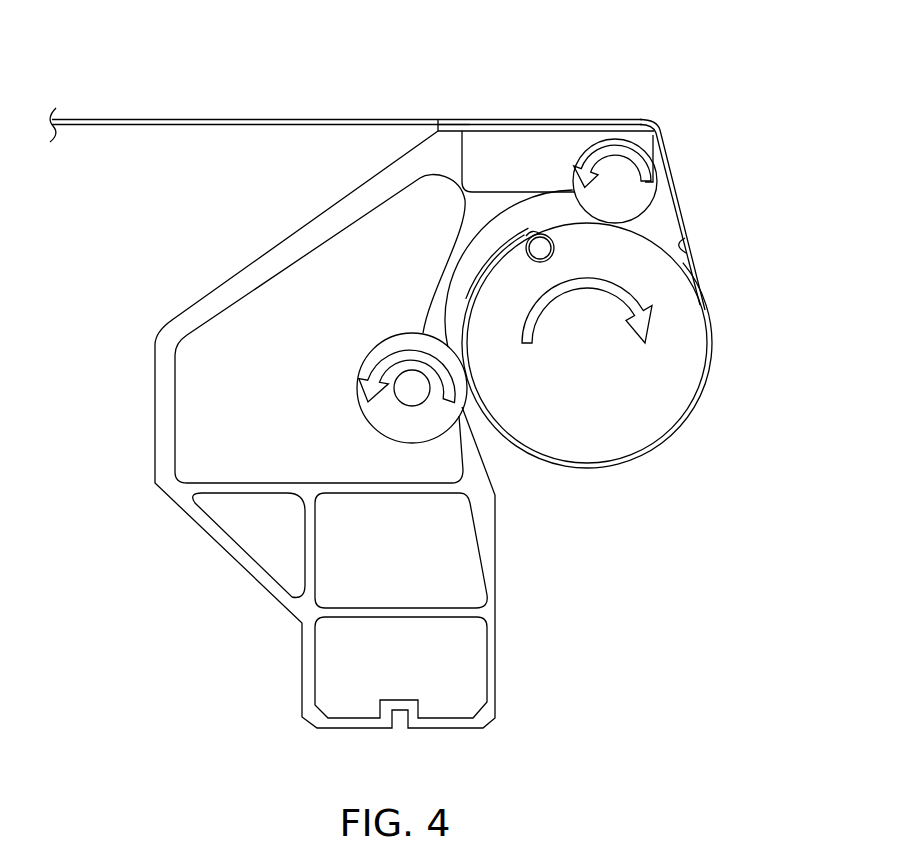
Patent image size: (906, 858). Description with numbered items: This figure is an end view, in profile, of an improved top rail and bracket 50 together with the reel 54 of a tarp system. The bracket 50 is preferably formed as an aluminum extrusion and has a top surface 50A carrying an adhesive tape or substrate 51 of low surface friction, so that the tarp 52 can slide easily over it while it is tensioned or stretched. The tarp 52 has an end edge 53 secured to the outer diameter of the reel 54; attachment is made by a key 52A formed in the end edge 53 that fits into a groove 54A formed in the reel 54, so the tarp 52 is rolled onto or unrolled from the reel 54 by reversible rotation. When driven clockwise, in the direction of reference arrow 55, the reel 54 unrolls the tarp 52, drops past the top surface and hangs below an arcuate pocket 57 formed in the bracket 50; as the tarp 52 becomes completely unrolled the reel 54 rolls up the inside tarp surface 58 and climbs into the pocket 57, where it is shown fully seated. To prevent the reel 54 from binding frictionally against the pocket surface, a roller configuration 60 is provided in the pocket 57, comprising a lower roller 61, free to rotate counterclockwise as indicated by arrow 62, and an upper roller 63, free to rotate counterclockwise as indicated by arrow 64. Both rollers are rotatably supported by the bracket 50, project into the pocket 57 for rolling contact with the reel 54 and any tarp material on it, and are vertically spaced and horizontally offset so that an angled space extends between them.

The bracket 50 is at (165, 381).
The top surface 50A is at (455, 122).
The adhesive tape or substrate 51 is at (522, 124).
The tarp 52 is at (231, 118).
The key 52A is at (537, 240).
The end edge 53 is at (554, 249).
The reel 54 is at (694, 403).
The groove 54A is at (522, 252).
The reference arrow 55 is at (575, 287).
The arcuate pocket 57 is at (660, 220).
The inside tarp surface 58 is at (679, 241).
The roller configuration 60 is at (697, 138).
The lower roller 61 is at (375, 420).
The arrow 62 is at (373, 353).
The upper roller 63 is at (615, 157).
The arrow 64 is at (655, 123).